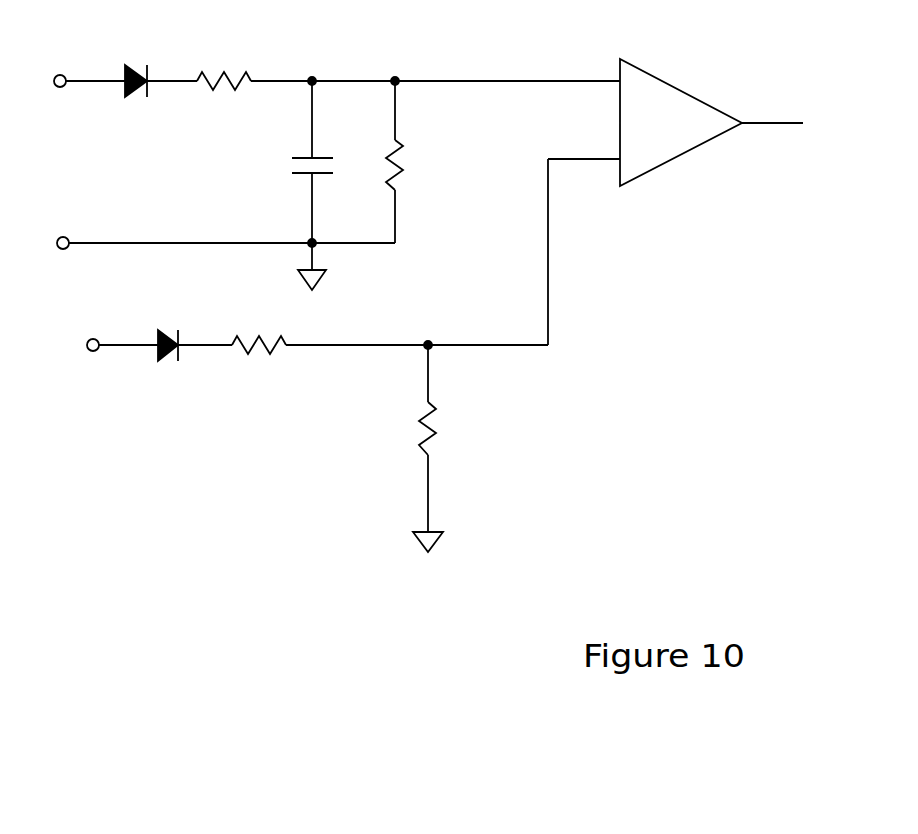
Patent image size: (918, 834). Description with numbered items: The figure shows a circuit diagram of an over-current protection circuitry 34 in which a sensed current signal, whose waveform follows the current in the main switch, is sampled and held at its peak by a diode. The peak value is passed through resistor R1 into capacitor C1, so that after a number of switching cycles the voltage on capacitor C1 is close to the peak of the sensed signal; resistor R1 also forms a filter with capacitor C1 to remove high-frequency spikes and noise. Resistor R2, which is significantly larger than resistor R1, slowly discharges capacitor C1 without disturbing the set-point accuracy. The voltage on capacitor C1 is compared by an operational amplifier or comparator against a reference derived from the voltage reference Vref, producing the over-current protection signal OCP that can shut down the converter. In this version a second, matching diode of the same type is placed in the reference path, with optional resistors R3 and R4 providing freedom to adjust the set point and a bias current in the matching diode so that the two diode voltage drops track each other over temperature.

The over-current protection circuitry 34 is at (725, 366).
The resistor R1 is at (408, 64).
The capacitor C1 is at (292, 162).
The resistor R2 is at (382, 162).
The over-current protection signal OCP is at (690, 202).
The voltage reference Vref is at (90, 348).
The resistor R3 is at (390, 327).
The resistor R4 is at (448, 448).